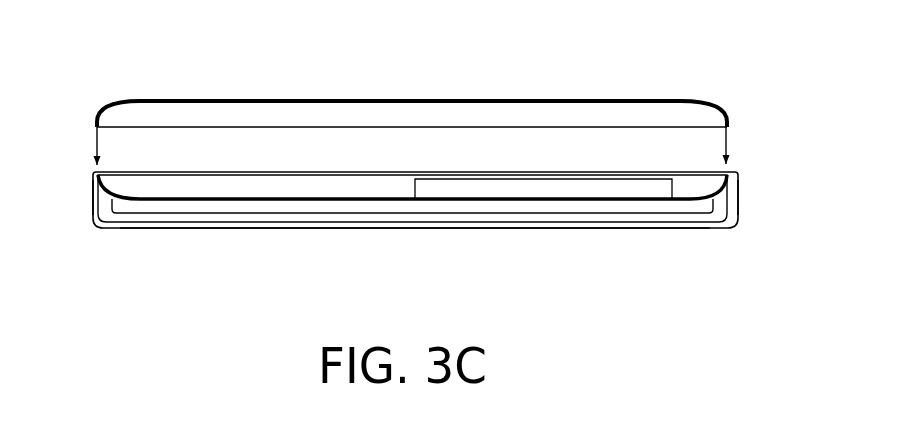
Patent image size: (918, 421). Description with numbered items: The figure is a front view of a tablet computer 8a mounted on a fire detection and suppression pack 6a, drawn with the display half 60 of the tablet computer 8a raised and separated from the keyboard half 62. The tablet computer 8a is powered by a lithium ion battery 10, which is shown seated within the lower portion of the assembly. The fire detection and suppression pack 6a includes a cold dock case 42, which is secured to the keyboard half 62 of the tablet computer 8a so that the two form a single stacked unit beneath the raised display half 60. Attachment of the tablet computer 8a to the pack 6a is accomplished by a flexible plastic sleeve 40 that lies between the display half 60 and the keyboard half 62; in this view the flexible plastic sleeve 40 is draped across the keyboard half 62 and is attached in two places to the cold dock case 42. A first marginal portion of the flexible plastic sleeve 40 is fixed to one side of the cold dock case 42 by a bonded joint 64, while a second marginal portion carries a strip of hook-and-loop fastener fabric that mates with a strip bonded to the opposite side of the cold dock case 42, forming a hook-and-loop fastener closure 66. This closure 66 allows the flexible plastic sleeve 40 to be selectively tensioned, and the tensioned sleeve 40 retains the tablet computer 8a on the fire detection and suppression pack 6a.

The display half 60 is at (380, 98).
The lithium ion battery 10 is at (555, 177).
The tablet computer 8a is at (665, 97).
The flexible plastic sleeve 40 is at (352, 140).
The keyboard half 62 is at (319, 203).
The cold dock case 42 is at (230, 230).
The bonded joint 64 is at (90, 198).
The hook-and-loop fastener closure 66 is at (734, 219).
The fire detection and suppression pack 6a is at (575, 232).